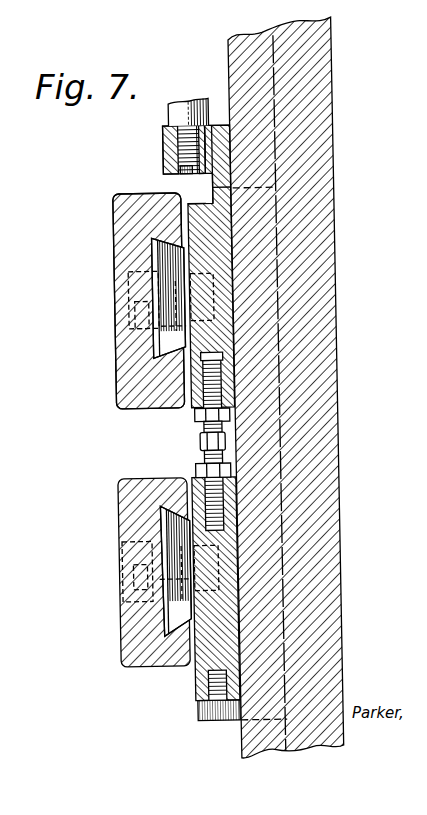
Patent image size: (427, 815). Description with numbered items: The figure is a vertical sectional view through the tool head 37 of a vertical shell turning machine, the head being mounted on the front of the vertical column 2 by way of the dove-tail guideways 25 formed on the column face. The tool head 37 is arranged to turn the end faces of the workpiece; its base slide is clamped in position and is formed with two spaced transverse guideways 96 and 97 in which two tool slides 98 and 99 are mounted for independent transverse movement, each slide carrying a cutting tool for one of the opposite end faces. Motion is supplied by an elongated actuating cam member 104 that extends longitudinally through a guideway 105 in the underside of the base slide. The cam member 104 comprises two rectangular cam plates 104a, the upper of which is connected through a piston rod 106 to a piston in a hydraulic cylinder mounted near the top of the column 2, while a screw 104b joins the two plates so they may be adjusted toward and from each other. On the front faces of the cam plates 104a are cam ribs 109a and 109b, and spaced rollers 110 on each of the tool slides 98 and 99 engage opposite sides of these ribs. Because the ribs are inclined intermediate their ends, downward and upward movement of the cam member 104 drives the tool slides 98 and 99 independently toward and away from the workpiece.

The vertical column 2 is at (331, 371).
The dove-tail guideways 25 is at (266, 170).
The tool head 37 is at (108, 232).
The transverse guideway 96 is at (160, 340).
The transverse guideway 97 is at (152, 612).
The tool slide 98 is at (116, 258).
The tool slide 99 is at (113, 526).
The actuating cam member 104 is at (160, 147).
The cam plates 104a is at (191, 405).
The screw 104b is at (195, 443).
The guideway 105 is at (184, 203).
The piston rod 106 is at (187, 103).
The cam rib 109a is at (195, 203).
The cam rib 109b is at (193, 698).
The rollers 110 is at (119, 309).